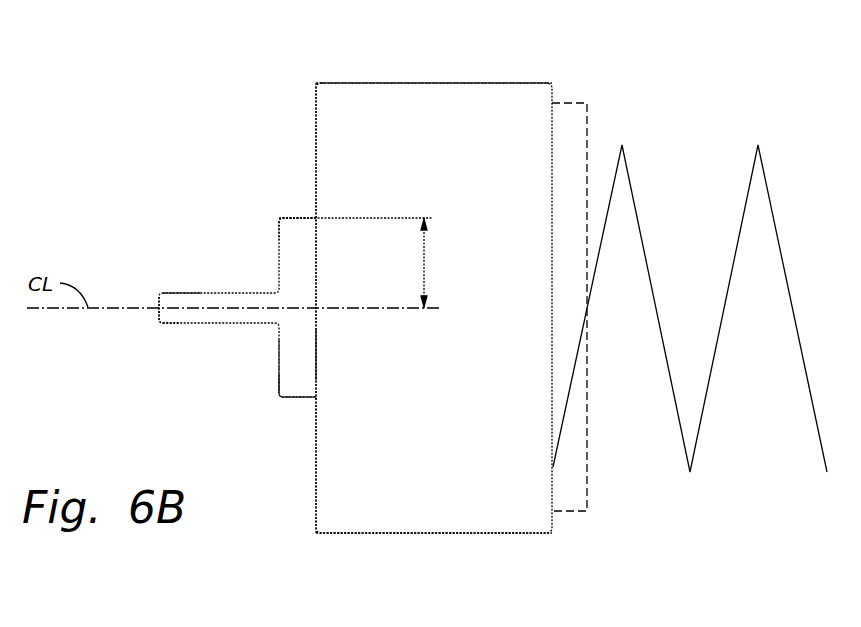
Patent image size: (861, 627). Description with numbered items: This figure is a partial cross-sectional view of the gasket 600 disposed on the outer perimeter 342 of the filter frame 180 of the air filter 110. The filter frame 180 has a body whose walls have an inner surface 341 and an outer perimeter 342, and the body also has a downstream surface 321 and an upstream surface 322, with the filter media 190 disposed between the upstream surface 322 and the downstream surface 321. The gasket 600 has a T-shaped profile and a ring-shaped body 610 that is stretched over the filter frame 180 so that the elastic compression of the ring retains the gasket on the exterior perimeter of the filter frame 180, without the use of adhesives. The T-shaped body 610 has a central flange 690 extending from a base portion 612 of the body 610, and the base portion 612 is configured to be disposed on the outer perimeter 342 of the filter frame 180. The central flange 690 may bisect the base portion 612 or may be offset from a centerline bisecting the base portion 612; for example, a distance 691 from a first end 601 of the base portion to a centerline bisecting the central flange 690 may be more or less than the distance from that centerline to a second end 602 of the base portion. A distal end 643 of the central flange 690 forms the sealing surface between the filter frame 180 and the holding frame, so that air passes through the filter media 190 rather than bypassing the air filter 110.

The air filter 110 is at (198, 54).
The filter frame 180 is at (434, 308).
The filter media 190 is at (743, 217).
The downstream surface 321 is at (437, 82).
The upstream surface 322 is at (437, 534).
The inner surface 341 is at (553, 497).
The outer perimeter 342 is at (315, 477).
The gasket 600 is at (278, 247).
The first end 601 is at (300, 217).
The second end 602 is at (300, 399).
The body 610 is at (278, 369).
The base portion 612 is at (317, 350).
The distal end 643 is at (160, 317).
The central flange 690 is at (178, 290).
The distance 691 is at (425, 265).